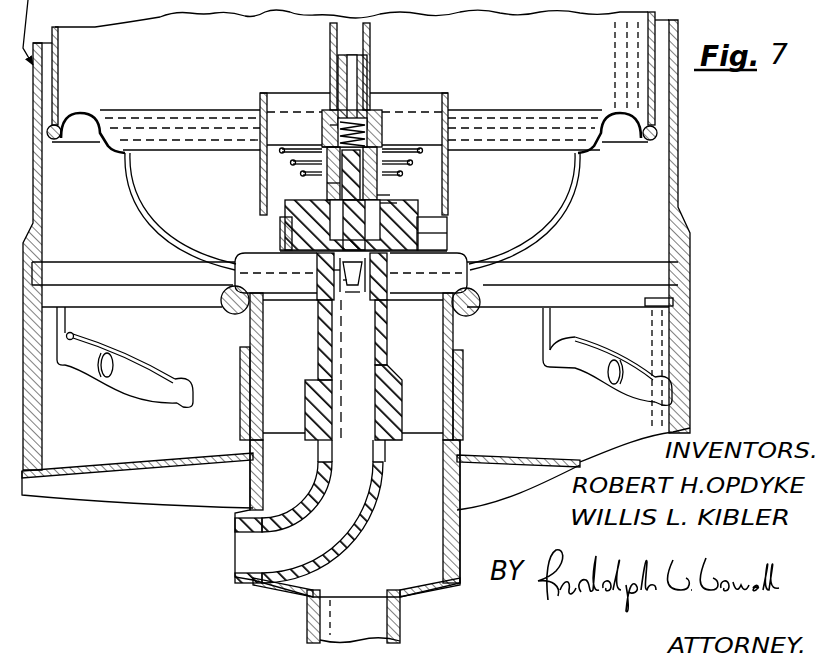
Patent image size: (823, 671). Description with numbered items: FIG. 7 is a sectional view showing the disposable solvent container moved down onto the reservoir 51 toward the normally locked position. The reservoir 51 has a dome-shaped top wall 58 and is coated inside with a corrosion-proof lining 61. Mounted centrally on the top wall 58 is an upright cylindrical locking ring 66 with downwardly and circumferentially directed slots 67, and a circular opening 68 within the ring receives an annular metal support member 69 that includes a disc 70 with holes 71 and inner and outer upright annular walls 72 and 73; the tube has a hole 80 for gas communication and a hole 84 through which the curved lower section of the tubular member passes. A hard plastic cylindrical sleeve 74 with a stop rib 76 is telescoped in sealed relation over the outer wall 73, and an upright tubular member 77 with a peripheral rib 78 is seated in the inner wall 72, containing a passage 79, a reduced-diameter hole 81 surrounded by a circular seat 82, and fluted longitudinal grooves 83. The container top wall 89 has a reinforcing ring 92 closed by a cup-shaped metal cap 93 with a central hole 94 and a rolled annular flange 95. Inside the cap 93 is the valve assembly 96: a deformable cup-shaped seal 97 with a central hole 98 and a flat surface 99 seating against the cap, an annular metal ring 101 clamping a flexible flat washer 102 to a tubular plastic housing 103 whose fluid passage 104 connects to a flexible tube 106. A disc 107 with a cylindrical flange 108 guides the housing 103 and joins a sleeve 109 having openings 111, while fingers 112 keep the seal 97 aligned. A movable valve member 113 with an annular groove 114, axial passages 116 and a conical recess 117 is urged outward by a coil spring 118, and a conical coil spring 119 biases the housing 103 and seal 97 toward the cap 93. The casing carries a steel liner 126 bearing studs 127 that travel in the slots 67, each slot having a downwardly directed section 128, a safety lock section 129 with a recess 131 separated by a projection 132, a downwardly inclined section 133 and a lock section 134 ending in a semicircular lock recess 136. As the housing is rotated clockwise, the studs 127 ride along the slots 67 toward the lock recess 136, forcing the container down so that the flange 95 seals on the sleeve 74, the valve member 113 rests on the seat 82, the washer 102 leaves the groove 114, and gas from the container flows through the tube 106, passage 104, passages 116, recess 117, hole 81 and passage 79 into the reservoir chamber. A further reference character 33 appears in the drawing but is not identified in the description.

The casing 33 is at (113, 48).
The reservoir 51 is at (133, 482).
The top wall 58 is at (150, 452).
The corrosion-proof lining 61 is at (198, 465).
The locking ring 66 is at (660, 302).
The slots 67 is at (131, 387).
The circular opening 68 is at (257, 480).
The support member 69 is at (463, 523).
The disc 70 is at (400, 455).
The holes 71 is at (275, 440).
The inner annular upright wall 72 is at (400, 410).
The outer annular upright wall 73 is at (465, 398).
The cylindrical sleeve 74 is at (250, 330).
The annular peripheral rib 76 is at (465, 362).
The tubular member 77 is at (387, 325).
The integral peripheral rib 78 is at (393, 375).
The passage 79 is at (360, 380).
The hole 80 is at (400, 623).
The reduced diameter hole 81 is at (347, 294).
The circular seat 82 is at (345, 282).
The longitudinal grooves 83 is at (330, 273).
The hole 84 is at (255, 585).
The top wall 89 is at (138, 210).
The reinforcing ring 92 is at (220, 293).
The cap 93 is at (242, 252).
The central hole 94 is at (400, 275).
The annular flange 95 is at (460, 318).
The valve assembly 96 is at (427, 82).
The valve member 97 is at (415, 210).
The central hole 98 is at (282, 227).
The flat surface 99 is at (400, 255).
The annular metal ring 101 is at (385, 195).
The flexible flat washer 102 is at (397, 201).
The tubular housing 103 is at (378, 110).
The fluid passage 104 is at (352, 57).
The flexible plastic tube 106 is at (333, 45).
The disc 107 is at (262, 112).
The cylindrical flange 108 is at (322, 145).
The sleeve 109 is at (455, 113).
The openings 111 is at (448, 235).
The fingers 112 is at (430, 222).
The movable valve member 113 is at (330, 130).
The annular peripheral groove 114 is at (337, 182).
The axial passages 116 is at (323, 260).
The conical-shaped recess 117 is at (355, 286).
The coil spring 118 is at (368, 135).
The coil spring 119 is at (420, 160).
The liner 126 is at (42, 300).
The studs 127 is at (106, 353).
The downwardly directed section 128 is at (65, 310).
The safety lock section 129 is at (560, 367).
The safety lock recess 131 is at (73, 332).
The projection 132 is at (73, 380).
The downwardly inclined section 133 is at (137, 398).
The lock section 134 is at (183, 400).
The lock recess 136 is at (187, 375).